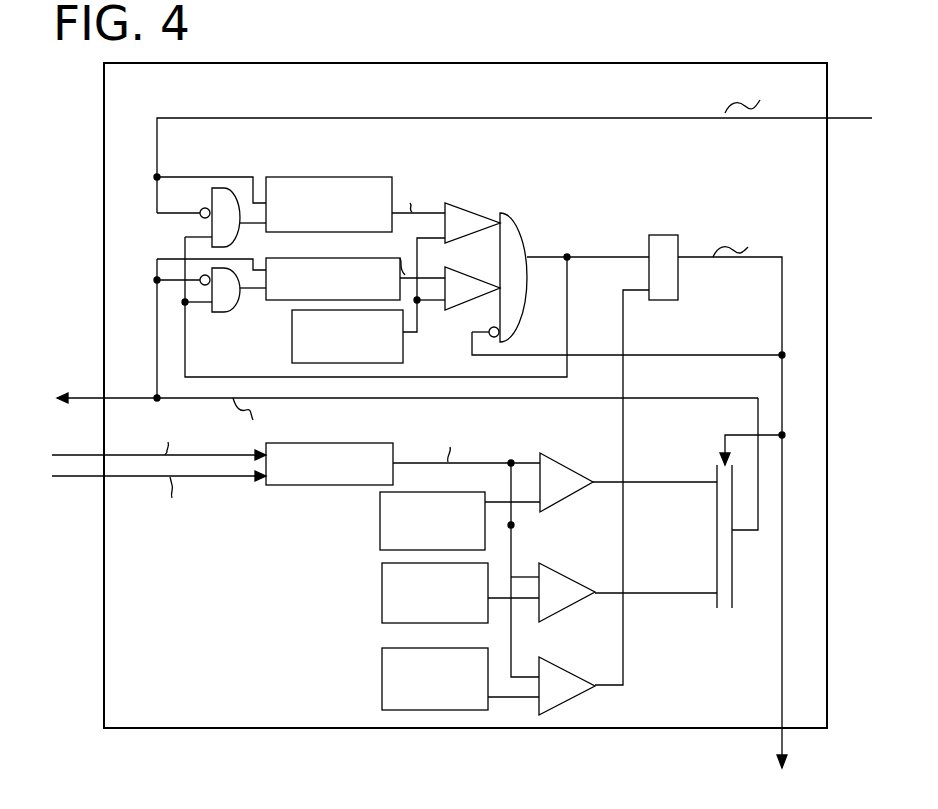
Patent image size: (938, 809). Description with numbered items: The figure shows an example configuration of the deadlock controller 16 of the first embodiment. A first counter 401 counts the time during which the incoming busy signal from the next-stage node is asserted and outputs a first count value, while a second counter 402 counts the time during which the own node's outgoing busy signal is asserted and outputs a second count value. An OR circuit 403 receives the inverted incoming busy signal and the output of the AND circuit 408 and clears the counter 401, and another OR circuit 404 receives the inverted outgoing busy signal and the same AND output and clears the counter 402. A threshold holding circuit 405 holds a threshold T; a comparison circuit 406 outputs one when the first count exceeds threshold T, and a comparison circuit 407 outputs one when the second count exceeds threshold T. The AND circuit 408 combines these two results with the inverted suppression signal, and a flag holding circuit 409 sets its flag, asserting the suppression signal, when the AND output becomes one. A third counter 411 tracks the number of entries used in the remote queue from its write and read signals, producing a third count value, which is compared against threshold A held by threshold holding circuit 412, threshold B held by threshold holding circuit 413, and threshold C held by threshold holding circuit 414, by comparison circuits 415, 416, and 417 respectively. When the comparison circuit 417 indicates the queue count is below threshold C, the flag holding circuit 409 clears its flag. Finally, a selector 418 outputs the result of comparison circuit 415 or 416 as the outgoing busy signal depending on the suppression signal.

The deadlock controller 16 is at (668, 63).
The counter 401 is at (323, 175).
The counter 402 is at (290, 300).
The OR circuit 403 is at (230, 242).
The OR circuit 404 is at (222, 312).
The threshold holding circuit 405 is at (418, 333).
The comparison circuit 406 is at (470, 203).
The comparison circuit 407 is at (474, 261).
The AND circuit 408 is at (515, 220).
The flag holding circuit 409 is at (665, 235).
The counter 411 is at (343, 442).
The threshold holding circuit 412 is at (378, 512).
The threshold holding circuit 413 is at (382, 600).
The threshold holding circuit 414 is at (382, 700).
The comparison circuit 415 is at (575, 458).
The comparison circuit 416 is at (548, 568).
The comparison circuit 417 is at (560, 667).
The selector 418 is at (722, 612).